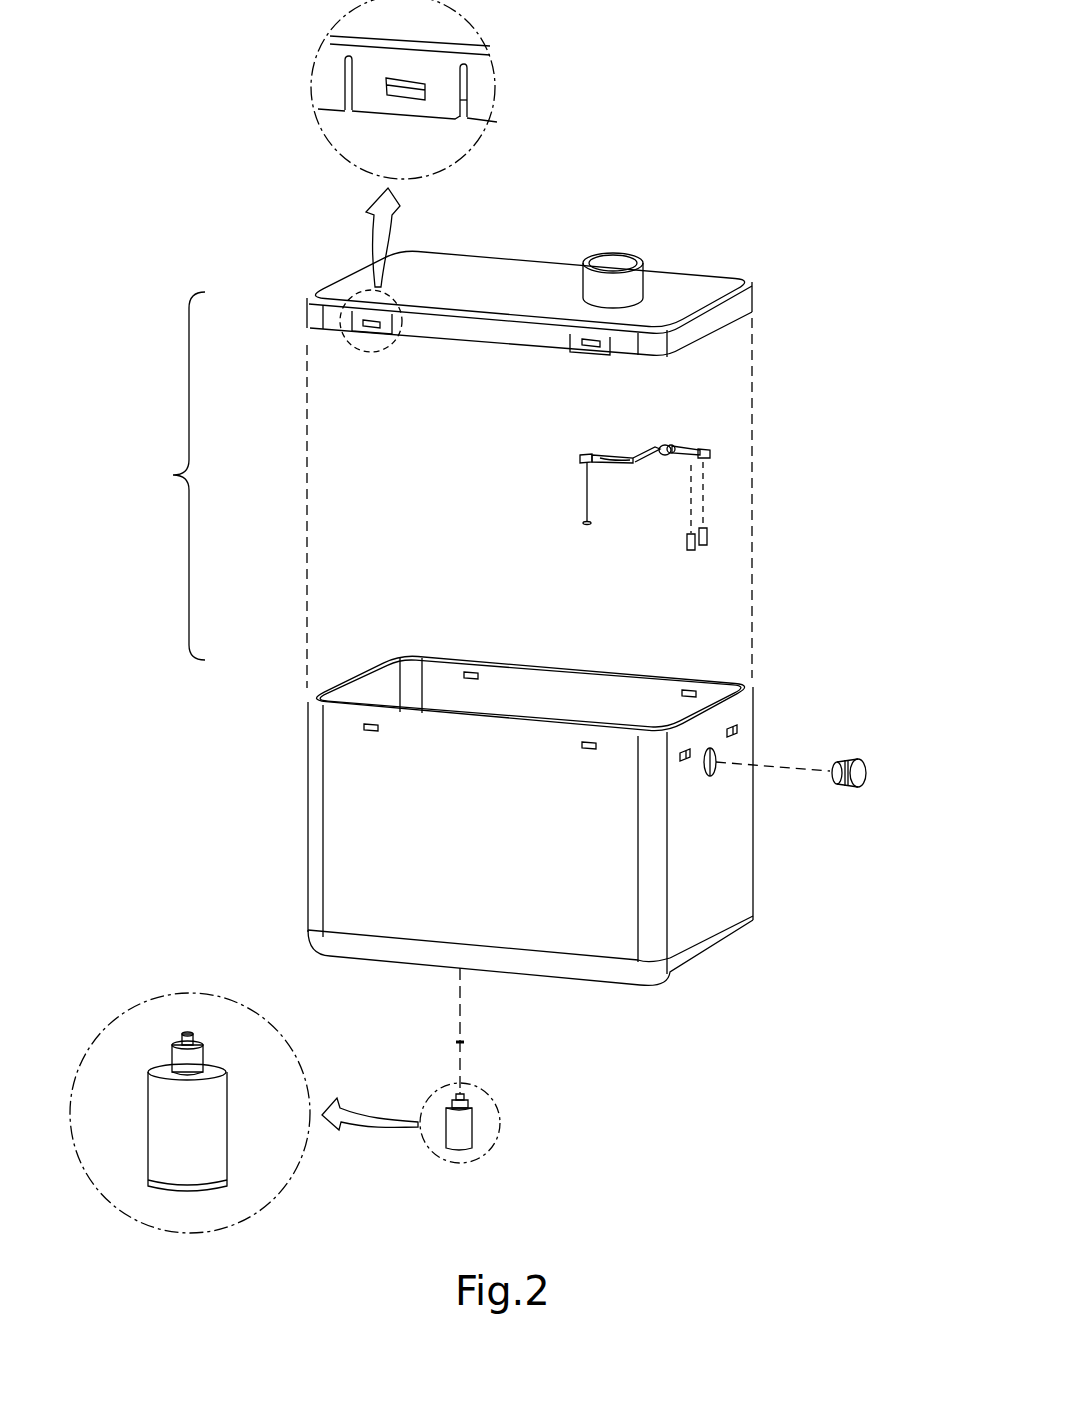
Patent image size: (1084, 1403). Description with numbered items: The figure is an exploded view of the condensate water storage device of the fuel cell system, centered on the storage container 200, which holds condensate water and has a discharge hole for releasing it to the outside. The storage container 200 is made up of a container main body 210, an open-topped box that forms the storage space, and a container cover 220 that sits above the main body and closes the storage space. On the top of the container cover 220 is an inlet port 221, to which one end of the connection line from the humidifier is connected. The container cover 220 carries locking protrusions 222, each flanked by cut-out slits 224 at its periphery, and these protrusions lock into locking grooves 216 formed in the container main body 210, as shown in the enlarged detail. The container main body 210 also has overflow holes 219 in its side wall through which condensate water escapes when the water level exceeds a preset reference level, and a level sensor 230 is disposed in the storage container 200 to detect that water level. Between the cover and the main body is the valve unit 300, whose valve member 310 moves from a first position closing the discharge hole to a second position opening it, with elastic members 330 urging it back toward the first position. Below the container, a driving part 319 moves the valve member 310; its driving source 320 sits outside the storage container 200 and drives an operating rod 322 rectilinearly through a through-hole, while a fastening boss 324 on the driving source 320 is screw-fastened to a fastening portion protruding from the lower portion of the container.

The storage container 200 is at (172, 476).
The container main body 210 is at (335, 722).
The locking grooves 216 is at (363, 730).
The overflow holes 219 is at (690, 752).
The container cover 220 is at (296, 296).
The inlet port 221 is at (628, 255).
The locking protrusions 222 is at (402, 92).
The cut-out slits 224 is at (463, 99).
The level sensor 230 is at (867, 778).
The valve unit 300 is at (573, 459).
The valve member 310 is at (612, 452).
The driving part 319 is at (465, 1128).
The driving source 320 is at (220, 1102).
The operating rod 322 is at (193, 1037).
The fastening boss 324 is at (205, 1060).
The elastic members 330 is at (668, 548).